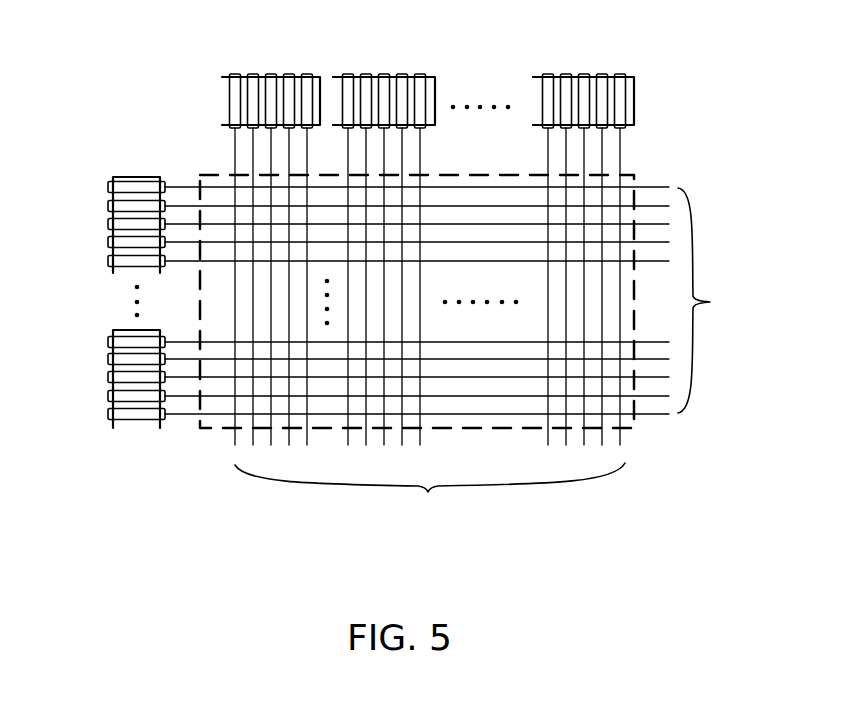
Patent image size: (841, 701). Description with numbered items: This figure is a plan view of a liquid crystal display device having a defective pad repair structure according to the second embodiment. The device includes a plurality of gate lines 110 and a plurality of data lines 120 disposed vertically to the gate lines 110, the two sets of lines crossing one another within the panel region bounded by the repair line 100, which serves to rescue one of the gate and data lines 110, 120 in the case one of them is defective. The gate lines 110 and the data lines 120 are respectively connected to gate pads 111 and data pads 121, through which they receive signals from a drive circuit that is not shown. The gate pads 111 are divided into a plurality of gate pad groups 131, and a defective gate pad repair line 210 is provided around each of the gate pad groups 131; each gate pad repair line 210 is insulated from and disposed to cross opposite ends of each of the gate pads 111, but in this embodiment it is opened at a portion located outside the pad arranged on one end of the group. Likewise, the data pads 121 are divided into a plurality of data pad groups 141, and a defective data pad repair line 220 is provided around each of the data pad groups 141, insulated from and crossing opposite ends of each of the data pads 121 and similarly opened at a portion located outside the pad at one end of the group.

The repair line 100 is at (634, 177).
The gate lines 110 is at (462, 300).
The gate pads 111 is at (123, 208).
The data lines 120 is at (430, 329).
The data pads 121 is at (232, 74).
The gate pad groups 131 is at (95, 232).
The data pad groups 141 is at (437, 66).
The gate pad repair line 210 is at (135, 176).
The data pad repair line 220 is at (319, 77).